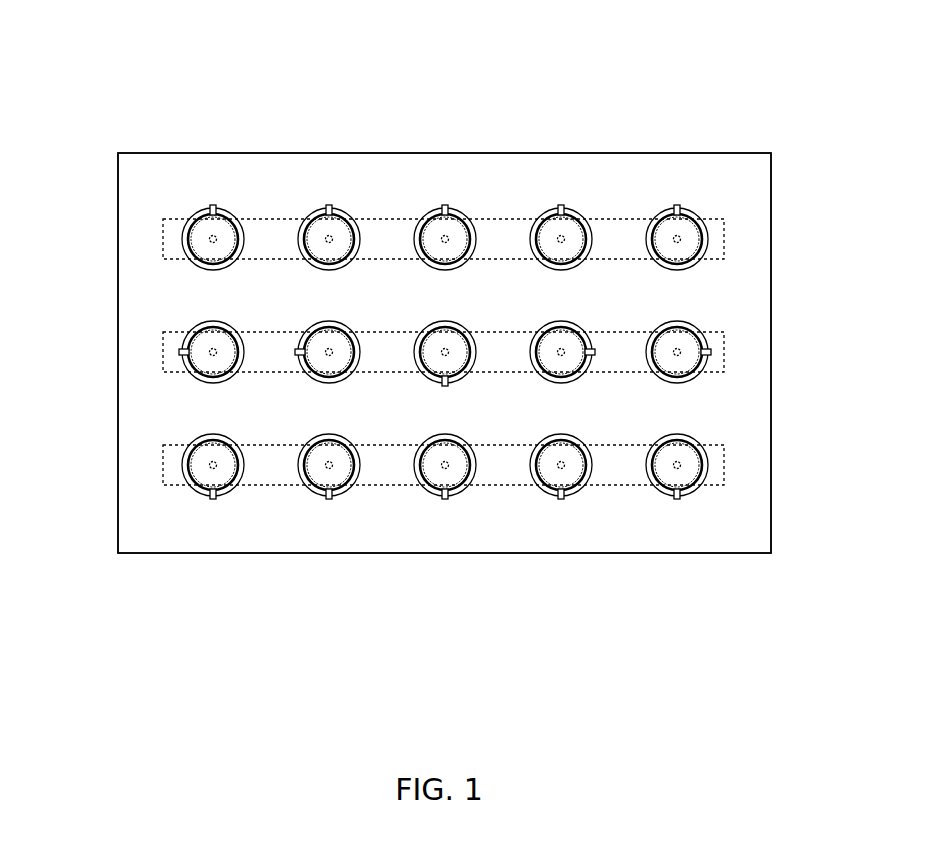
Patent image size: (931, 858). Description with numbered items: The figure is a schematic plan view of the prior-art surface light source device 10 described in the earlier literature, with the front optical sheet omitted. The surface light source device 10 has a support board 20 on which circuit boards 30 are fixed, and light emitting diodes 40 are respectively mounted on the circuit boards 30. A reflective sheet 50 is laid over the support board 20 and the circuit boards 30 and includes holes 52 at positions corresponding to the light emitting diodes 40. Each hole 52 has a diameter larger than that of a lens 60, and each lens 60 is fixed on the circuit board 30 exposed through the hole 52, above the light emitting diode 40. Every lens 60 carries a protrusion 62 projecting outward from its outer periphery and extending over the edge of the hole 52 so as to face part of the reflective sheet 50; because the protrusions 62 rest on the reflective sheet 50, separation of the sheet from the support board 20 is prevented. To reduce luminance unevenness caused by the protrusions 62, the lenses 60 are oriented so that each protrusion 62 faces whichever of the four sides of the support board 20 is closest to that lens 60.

The surface light source device 10 is at (762, 99).
The support board 20 is at (244, 175).
The circuit board 30 is at (423, 333).
The light emitting diode 40 is at (326, 349).
The reflective sheet 50 is at (175, 178).
The hole 52 is at (658, 218).
The lens 60 is at (197, 218).
The protrusion 62 is at (183, 355).